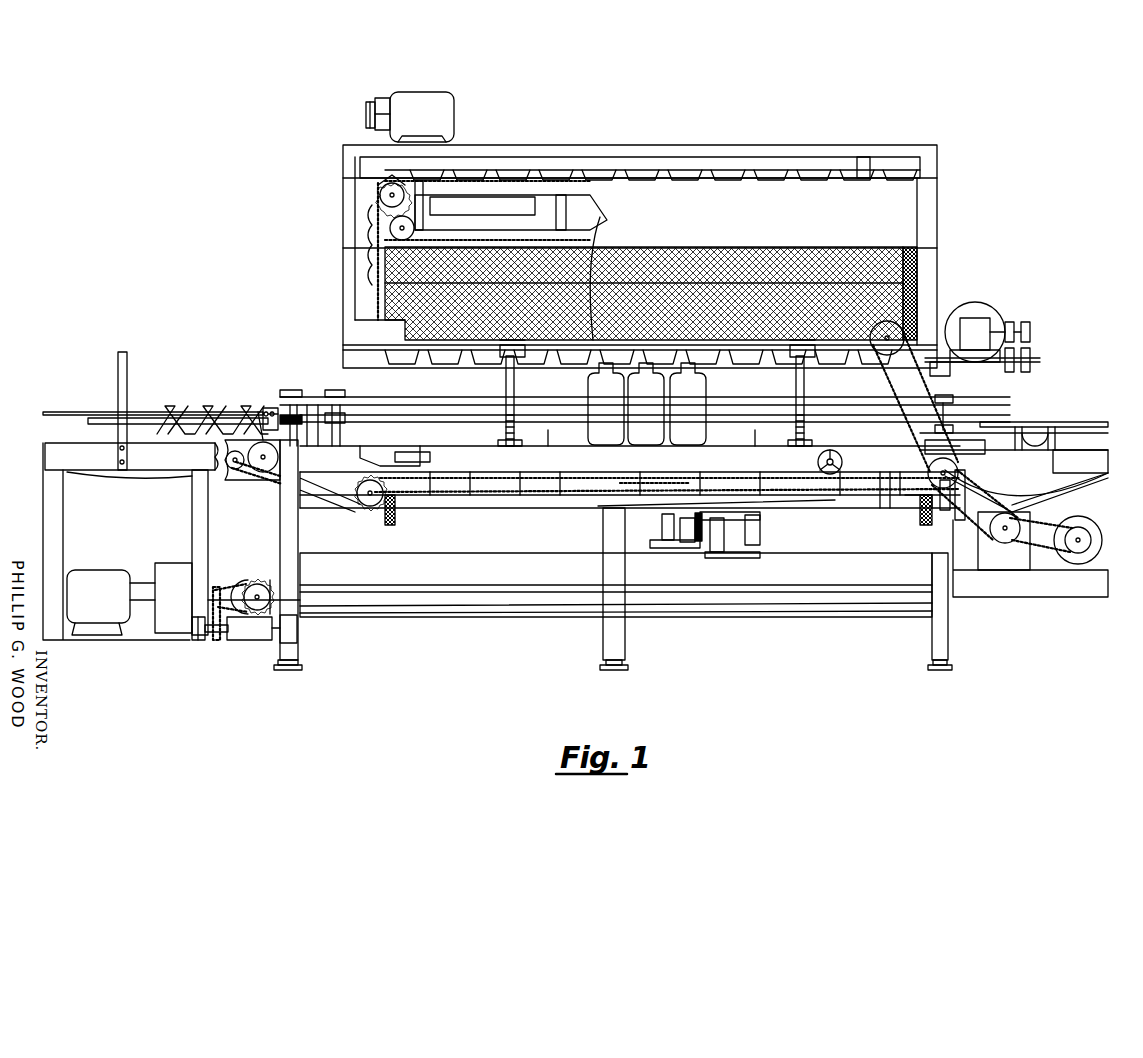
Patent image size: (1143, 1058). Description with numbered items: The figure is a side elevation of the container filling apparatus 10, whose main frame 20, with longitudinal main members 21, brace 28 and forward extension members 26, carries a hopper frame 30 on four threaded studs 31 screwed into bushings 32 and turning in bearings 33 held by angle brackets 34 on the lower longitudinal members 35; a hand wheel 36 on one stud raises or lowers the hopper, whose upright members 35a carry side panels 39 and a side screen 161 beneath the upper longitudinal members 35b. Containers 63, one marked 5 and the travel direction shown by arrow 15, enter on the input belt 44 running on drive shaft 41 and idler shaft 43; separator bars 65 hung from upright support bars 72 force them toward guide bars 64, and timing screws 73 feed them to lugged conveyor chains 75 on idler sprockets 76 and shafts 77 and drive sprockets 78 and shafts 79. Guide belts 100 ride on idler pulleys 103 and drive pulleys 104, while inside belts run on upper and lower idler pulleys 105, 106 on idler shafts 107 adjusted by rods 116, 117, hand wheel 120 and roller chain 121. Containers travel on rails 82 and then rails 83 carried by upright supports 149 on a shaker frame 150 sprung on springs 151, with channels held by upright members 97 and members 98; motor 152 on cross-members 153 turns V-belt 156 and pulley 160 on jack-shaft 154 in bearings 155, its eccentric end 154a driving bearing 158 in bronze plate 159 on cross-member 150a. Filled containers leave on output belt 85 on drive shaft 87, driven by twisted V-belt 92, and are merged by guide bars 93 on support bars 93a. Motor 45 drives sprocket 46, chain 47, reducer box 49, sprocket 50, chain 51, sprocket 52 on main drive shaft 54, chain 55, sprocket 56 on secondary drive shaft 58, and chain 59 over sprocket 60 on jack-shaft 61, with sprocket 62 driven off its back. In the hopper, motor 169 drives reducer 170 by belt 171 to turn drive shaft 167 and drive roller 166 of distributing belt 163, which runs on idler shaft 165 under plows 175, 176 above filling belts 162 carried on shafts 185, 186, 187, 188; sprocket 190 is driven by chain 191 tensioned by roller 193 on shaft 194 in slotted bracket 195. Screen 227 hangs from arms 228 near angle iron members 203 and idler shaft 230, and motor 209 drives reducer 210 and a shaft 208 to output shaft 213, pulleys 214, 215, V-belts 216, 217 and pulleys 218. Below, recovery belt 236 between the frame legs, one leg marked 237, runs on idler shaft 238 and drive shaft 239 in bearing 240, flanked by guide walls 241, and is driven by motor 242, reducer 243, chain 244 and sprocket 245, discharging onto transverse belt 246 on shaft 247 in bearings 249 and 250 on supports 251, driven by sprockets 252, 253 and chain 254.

The bottle 5 is at (648, 380).
The container filling apparatus 10 is at (330, 270).
The direction of travel 15 is at (625, 323).
The main frame 20 is at (600, 555).
The longitudinal main members 21 is at (470, 452).
The upper forward extension members 26 is at (131, 456).
The brace 28 is at (536, 553).
The hopper frame 30 is at (728, 148).
The threaded supporting studs 31 is at (505, 382).
The bushings 32 is at (510, 447).
The bearings 33 is at (512, 356).
The angle brackets 34 is at (528, 352).
The lower outside longitudinal members 35 is at (446, 352).
The upright members 35a is at (352, 248).
The upper longitudinal members 35b is at (637, 152).
The hand wheel 36 is at (513, 488).
The longitudinal side panel 39 is at (700, 205).
The drive shaft 41 is at (263, 455).
The idler shaft 43 is at (50, 453).
The endless conveyor belt 44 is at (102, 477).
The variable speed motor 45 is at (1100, 530).
The sprocket 46 is at (1085, 545).
The drive chain 47 is at (1050, 568).
The reducer box 49 is at (1004, 541).
The sprocket 50 is at (1002, 536).
The drive chain 51 is at (48, 486).
The sprocket 52 is at (943, 512).
The main drive shaft 54 is at (928, 502).
The drive chain 55 is at (880, 492).
The sprocket 56 is at (356, 504).
The secondary drive shaft 58 is at (370, 508).
The chain 59 is at (262, 484).
The sprocket 60 is at (237, 470).
The jack-shaft 61 is at (240, 482).
The sprocket 62 is at (240, 458).
The containers 63 is at (647, 404).
The guide bars 64 is at (50, 412).
The separator bars 65 is at (95, 418).
The upright support bars 72 is at (117, 364).
The timing screws 73 is at (180, 410).
The container conveyor chains 75 is at (270, 412).
The idler sprockets 76 is at (262, 412).
The upright idler shafts 77 is at (285, 414).
The drive sprockets 78 is at (955, 430).
The upright drive shafts 79 is at (952, 413).
The rails 82 is at (367, 454).
The rails 83 is at (412, 454).
The container output conveyor belt 85 is at (1040, 492).
The drive shaft 87 is at (1092, 456).
The twisted V-belt 92 is at (1060, 488).
The converging guide bars 93 is at (1072, 422).
The support bars 93a is at (1032, 432).
The upright members 97 is at (304, 438).
The members 98 is at (550, 437).
The guide belts 100 is at (302, 396).
The idler pulleys 103 is at (290, 390).
The drive pulleys 104 is at (938, 377).
The upper idler pulleys 105 is at (346, 398).
The lower idler pulleys 106 is at (347, 416).
The idler shafts 107 is at (336, 436).
The transverse adjusting rod 116 is at (532, 458).
The transverse adjusting rod 117 is at (843, 462).
The hand wheel 120 is at (832, 455).
The roller chain 121 is at (585, 482).
The upright supports 149 is at (418, 458).
The shaker frame 150 is at (488, 511).
The horizontal cross-member 150a is at (670, 490).
The springs 151 is at (392, 524).
The variable speed motor 152 is at (762, 516).
The cross-members 153 is at (726, 545).
The jack-shaft 154 is at (762, 530).
The eccentric end 154a is at (660, 520).
The bearings 155 is at (755, 552).
The V-belt 156 is at (699, 542).
The bearing 158 is at (665, 548).
The bronze plate 159 is at (648, 506).
The pulley 160 is at (690, 543).
The side screen 161 is at (727, 278).
The filling belts 162 is at (495, 170).
The distributing conveyor belt 163 is at (445, 218).
The idler shaft 165 is at (875, 232).
The drive roller 166 is at (398, 228).
The drive shaft 167 is at (375, 232).
The motor 169 is at (422, 117).
The reducer 170 is at (380, 96).
The belt 171 is at (368, 100).
The second set of plows 175 is at (577, 212).
The third plow 176 is at (482, 205).
The shaft 185 is at (885, 197).
The shaft 186 is at (388, 195).
The shaft 187 is at (386, 337).
The shaft 188 is at (892, 338).
The sprocket 190 is at (912, 312).
The chain 191 is at (885, 385).
The roller 193 is at (960, 446).
The shaft 194 is at (930, 472).
The slotted bracket 195 is at (1035, 437).
The angle iron members 203 is at (345, 362).
The shaft 208 is at (960, 363).
The motor 209 is at (992, 315).
The reducer 210 is at (982, 334).
The output shaft 213 is at (1033, 333).
The pulley 214 is at (1017, 326).
The pulley 215 is at (1033, 340).
The V-belt 216 is at (1030, 350).
The V-belt 217 is at (1032, 362).
The pulleys 218 is at (991, 375).
The elongated screen 227 is at (535, 310).
The supporting arms 228 is at (408, 278).
The idler shaft 230 is at (902, 369).
The produce recovery conveyor belt 236 is at (460, 614).
The leg 237 is at (615, 602).
The idler shaft 238 is at (938, 604).
The drive shaft 239 is at (257, 584).
The bearing 240 is at (282, 600).
The tapered guide walls 241 is at (425, 572).
The motor 242 is at (111, 602).
The reducer 243 is at (173, 598).
The chain 244 is at (212, 586).
The sprocket 245 is at (246, 583).
The transverse conveyor belt 246 is at (249, 628).
The shaft 247 is at (287, 645).
The bearings 249 is at (296, 640).
The bearings 250 is at (197, 642).
The supports 251 is at (192, 505).
The sprocket 252 is at (213, 595).
The sprocket 253 is at (220, 642).
The chain 254 is at (216, 642).